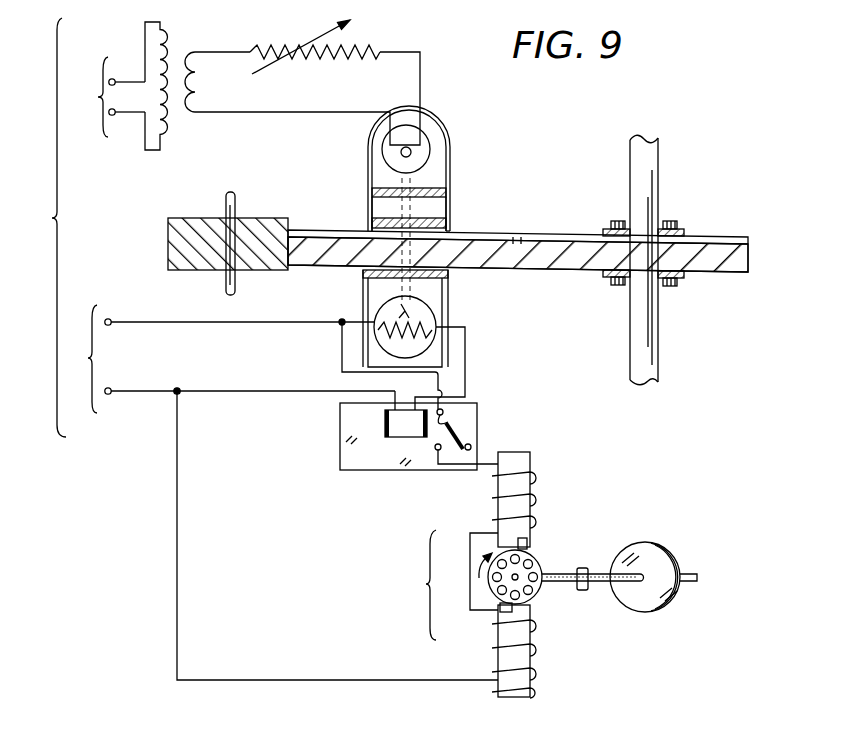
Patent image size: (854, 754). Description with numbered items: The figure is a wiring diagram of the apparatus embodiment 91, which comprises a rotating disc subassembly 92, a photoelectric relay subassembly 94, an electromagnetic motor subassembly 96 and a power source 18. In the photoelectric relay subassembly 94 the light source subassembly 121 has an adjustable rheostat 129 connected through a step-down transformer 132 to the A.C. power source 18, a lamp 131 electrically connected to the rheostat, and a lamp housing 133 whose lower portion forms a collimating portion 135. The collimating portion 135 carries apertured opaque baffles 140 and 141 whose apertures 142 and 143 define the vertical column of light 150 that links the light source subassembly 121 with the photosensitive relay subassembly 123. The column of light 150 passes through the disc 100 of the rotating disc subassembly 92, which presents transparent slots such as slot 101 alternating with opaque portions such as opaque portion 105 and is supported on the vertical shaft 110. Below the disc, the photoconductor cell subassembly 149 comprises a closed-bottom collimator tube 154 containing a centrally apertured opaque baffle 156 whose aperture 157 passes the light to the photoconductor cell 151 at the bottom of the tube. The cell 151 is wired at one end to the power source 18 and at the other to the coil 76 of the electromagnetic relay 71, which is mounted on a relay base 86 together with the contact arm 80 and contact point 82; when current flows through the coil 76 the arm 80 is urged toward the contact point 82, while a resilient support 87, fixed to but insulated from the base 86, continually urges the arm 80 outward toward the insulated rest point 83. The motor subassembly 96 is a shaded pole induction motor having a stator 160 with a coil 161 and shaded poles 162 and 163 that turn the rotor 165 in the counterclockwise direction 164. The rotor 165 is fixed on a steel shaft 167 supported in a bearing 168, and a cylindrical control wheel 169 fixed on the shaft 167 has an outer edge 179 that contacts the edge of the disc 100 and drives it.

The photoelectric relay subassembly 94 is at (47, 227).
The step-down transformer 132 is at (174, 35).
The light source subassembly 121 is at (107, 97).
The power source 18 is at (113, 86).
The adjustable rheostat 129 is at (382, 45).
The lamp housing 133 is at (450, 160).
The lamp 131 is at (418, 150).
The aperture 142 is at (405, 184).
The apertured opaque baffle 140 is at (446, 192).
The aperture 143 is at (402, 215).
The apertured opaque baffle 141 is at (372, 223).
The collimating portion 135 is at (448, 216).
The column of light 150 is at (484, 227).
The rotating disc subassembly 92 is at (750, 257).
The slot 101 is at (503, 234).
The apparatus embodiment 91 is at (703, 209).
The disc 100 is at (695, 240).
The opaque portion 105 is at (616, 232).
The vertical shaft 110 is at (648, 333).
The control wheel 169 is at (168, 236).
The shaft 167 is at (225, 284).
The outer edge of control wheel 179 is at (292, 272).
The collimator tube 154 is at (366, 312).
The opaque baffle 156 is at (445, 284).
The aperture 157 is at (400, 282).
The photoconductor cell 151 is at (432, 320).
The photoconductor cell subassembly 149 is at (358, 338).
The photosensitive relay subassembly 123 is at (228, 359).
The electromagnetic relay 71 is at (340, 428).
The relay base 86 is at (386, 426).
The coil 76 is at (402, 438).
The resilient support 87 is at (452, 420).
The contact arm 80 is at (450, 420).
The insulated rest point 83 is at (474, 446).
The contact point 82 is at (438, 452).
The motor subassembly 96 is at (416, 585).
The stator 160 is at (530, 466).
The coil 161 is at (522, 670).
The shaded pole 162 is at (526, 540).
The shaded pole 163 is at (500, 606).
The direction of rotation 164 is at (478, 563).
The rotor 165 is at (538, 572).
The bearing 168 is at (580, 592).